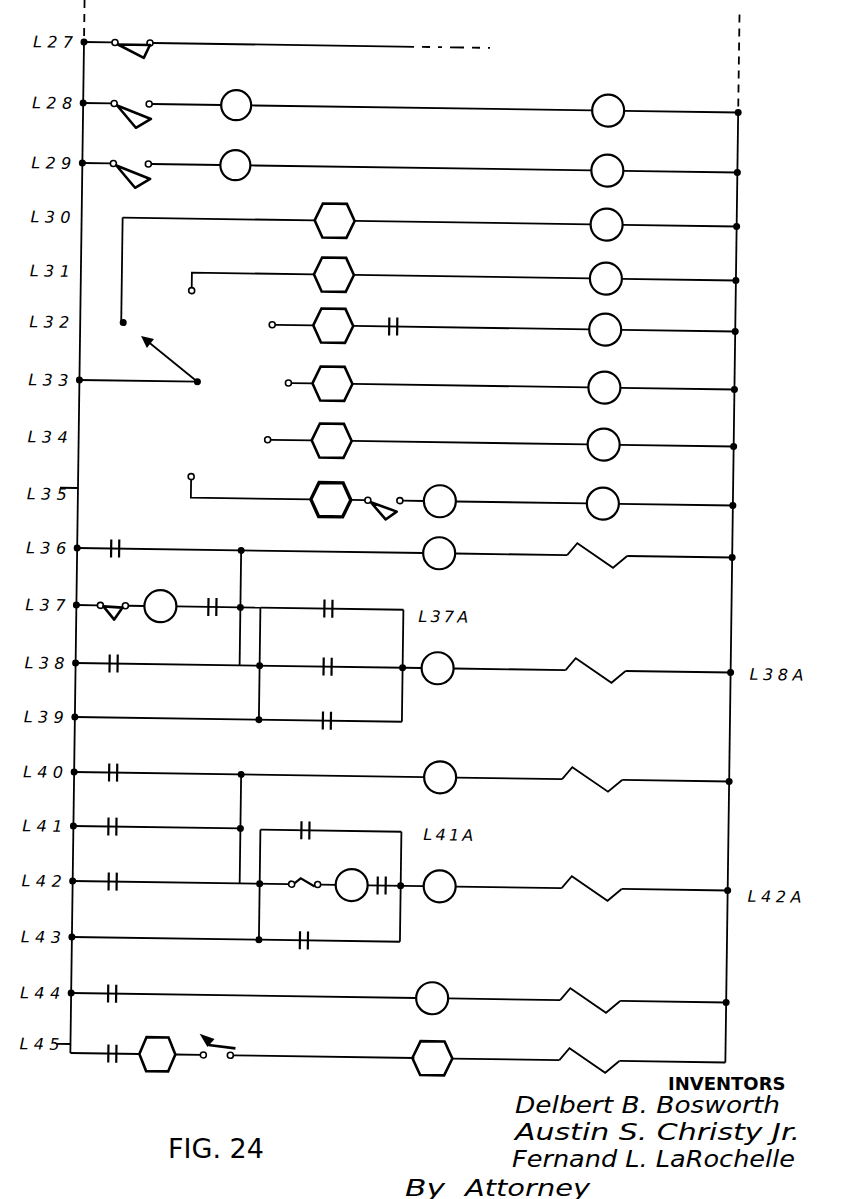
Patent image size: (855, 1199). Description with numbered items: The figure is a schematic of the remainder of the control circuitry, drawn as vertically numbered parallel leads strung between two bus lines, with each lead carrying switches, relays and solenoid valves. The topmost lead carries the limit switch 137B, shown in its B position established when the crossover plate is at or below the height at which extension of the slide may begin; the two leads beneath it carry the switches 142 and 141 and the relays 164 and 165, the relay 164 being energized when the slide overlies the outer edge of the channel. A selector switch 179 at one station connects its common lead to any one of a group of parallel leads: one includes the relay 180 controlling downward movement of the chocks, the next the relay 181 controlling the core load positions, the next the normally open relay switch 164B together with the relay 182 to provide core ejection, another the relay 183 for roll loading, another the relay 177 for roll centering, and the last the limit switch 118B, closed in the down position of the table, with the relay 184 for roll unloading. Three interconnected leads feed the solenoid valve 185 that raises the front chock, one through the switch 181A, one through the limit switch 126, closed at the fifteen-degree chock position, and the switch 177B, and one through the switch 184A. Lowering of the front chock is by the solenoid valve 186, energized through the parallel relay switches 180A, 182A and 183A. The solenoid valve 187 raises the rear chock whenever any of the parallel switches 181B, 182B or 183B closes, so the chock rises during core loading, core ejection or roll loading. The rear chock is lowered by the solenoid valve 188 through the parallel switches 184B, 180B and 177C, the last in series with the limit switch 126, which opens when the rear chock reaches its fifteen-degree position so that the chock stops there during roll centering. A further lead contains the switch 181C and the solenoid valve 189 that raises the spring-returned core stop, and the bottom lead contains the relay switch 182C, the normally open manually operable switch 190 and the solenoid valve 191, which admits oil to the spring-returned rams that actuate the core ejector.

The limit switch 137B is at (140, 38).
The switch 142 is at (143, 102).
The switch 141 is at (143, 162).
The relay 164 is at (623, 107).
The relay coil 165 is at (623, 167).
The relay 180 is at (623, 221).
The relay 181 is at (623, 275).
The relay switch 164B is at (407, 324).
The relay 182 is at (623, 326).
The selector switch 179 is at (188, 357).
The relay 183 is at (623, 384).
The relay 177 is at (623, 440).
The limit switch 118B is at (385, 492).
The relay 184 is at (623, 499).
The relay switch 181A is at (134, 547).
The solenoid valve 185 is at (603, 560).
The limit switch 126 is at (112, 600).
The relay switch 177B is at (214, 597).
The relay switch 180A is at (347, 607).
The relay switch 184A is at (127, 661).
The relay switch 182A is at (343, 663).
The solenoid valve 186 is at (601, 673).
The relay switch 183A is at (350, 714).
The relay switch 181B is at (128, 772).
The solenoid valve 187 is at (600, 782).
The relay switch 182B is at (130, 826).
The relay switch 180B is at (324, 825).
The relay switch 184B is at (326, 938).
The relay switch 183B is at (136, 880).
The relay switch 177C is at (402, 874).
The solenoid valve 188 is at (600, 894).
The relay switch 181C is at (130, 991).
The solenoid valve 189 is at (620, 987).
The relay switch 182C is at (118, 1059).
The manually operable switch 190 is at (231, 1058).
The solenoid valve 191 is at (614, 1046).